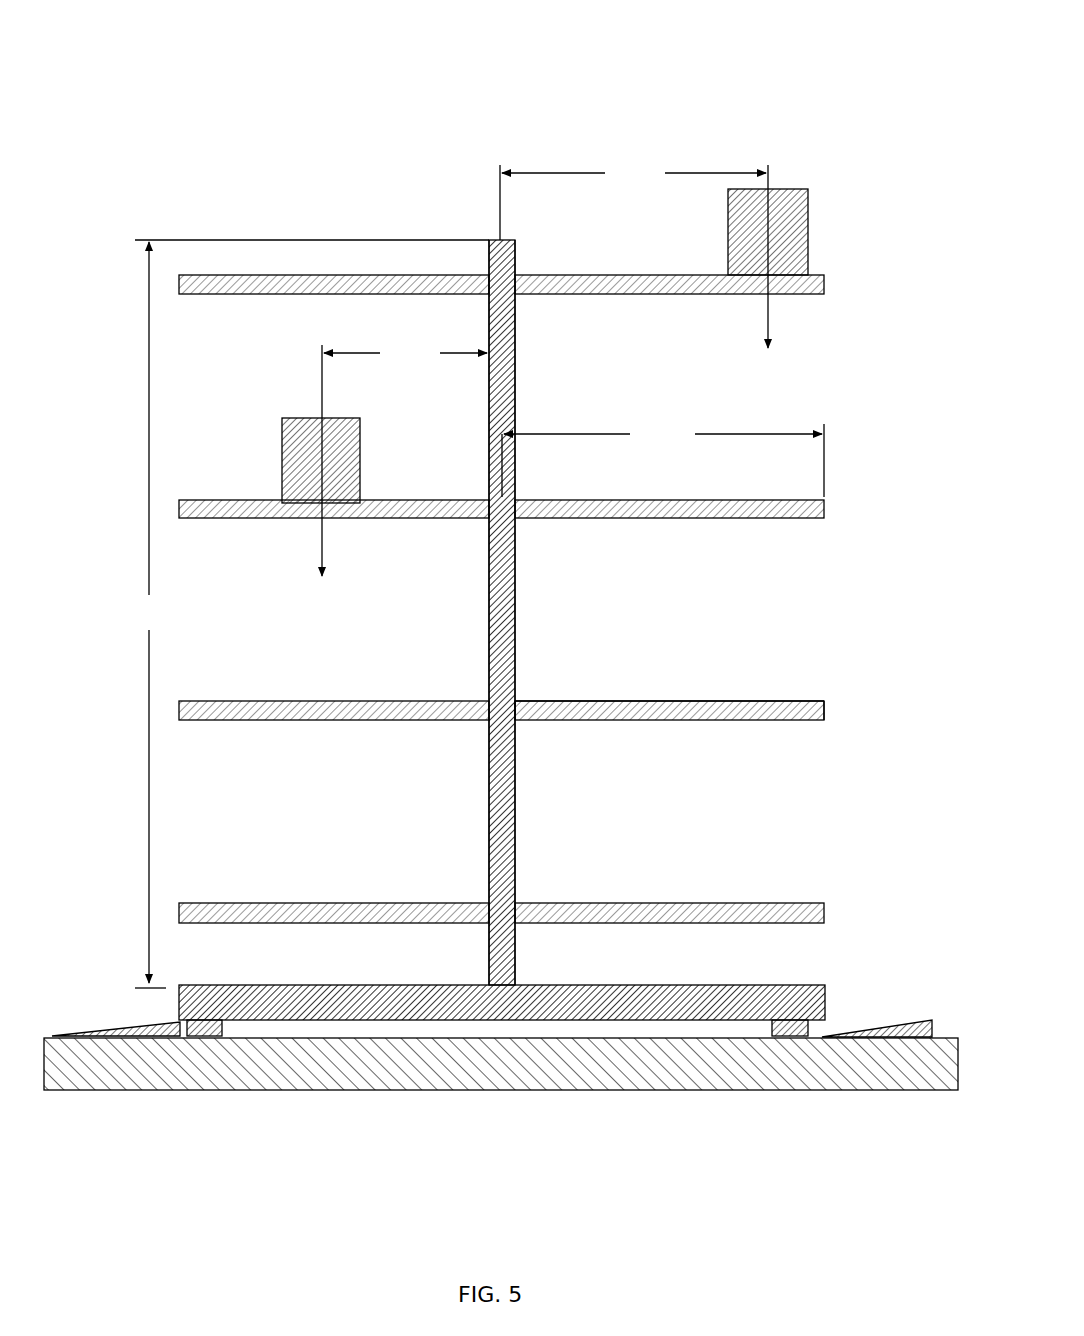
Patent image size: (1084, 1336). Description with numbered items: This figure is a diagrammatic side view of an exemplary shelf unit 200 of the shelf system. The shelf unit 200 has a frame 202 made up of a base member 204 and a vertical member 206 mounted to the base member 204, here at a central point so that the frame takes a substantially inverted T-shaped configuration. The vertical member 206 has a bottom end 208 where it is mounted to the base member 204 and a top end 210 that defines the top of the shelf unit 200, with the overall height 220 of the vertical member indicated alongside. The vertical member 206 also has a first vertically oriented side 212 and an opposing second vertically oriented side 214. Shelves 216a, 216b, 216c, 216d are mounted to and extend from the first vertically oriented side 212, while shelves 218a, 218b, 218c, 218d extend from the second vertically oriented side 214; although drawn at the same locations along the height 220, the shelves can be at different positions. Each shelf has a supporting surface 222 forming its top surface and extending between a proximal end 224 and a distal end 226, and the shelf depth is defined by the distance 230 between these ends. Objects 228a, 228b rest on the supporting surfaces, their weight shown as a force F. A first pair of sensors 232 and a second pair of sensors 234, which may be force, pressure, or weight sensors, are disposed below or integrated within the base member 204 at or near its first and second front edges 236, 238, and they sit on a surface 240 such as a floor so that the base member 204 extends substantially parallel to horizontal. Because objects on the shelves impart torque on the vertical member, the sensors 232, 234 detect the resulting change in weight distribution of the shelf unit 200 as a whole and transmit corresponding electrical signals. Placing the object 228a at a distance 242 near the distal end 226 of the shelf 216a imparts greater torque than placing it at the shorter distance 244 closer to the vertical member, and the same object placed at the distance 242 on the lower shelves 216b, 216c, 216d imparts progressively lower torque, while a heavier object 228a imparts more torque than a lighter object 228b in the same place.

The shelf unit 200 is at (545, 72).
The frame 202 is at (523, 600).
The base member 204 is at (823, 966).
The vertical member 206 is at (523, 373).
The bottom end 208 is at (505, 985).
The top end 210 is at (497, 240).
The first vertically oriented side 212 is at (515, 803).
The second vertically oriented side 214 is at (489, 803).
The shelf 216a is at (663, 294).
The shelf 216b is at (685, 518).
The shelf 216c is at (688, 720).
The shelf 216d is at (690, 923).
The shelf 218a is at (251, 294).
The shelf 218b is at (235, 518).
The shelf 218c is at (262, 720).
The shelf 218d is at (278, 923).
The vertical member height 220 is at (310, 614).
The supporting surface 222 is at (645, 701).
The proximal end 224 is at (523, 688).
The distal end 226 is at (818, 690).
The object 228a is at (808, 215).
The object 228b is at (282, 455).
The distance 230 is at (663, 460).
The first pair of sensors 232 is at (790, 1034).
The second pair of sensors 234 is at (203, 1034).
The first front edge 236 is at (826, 1000).
The second front edge 238 is at (178, 1003).
The surface 240 is at (447, 1090).
The distance 242 is at (633, 201).
The distance 244 is at (405, 355).